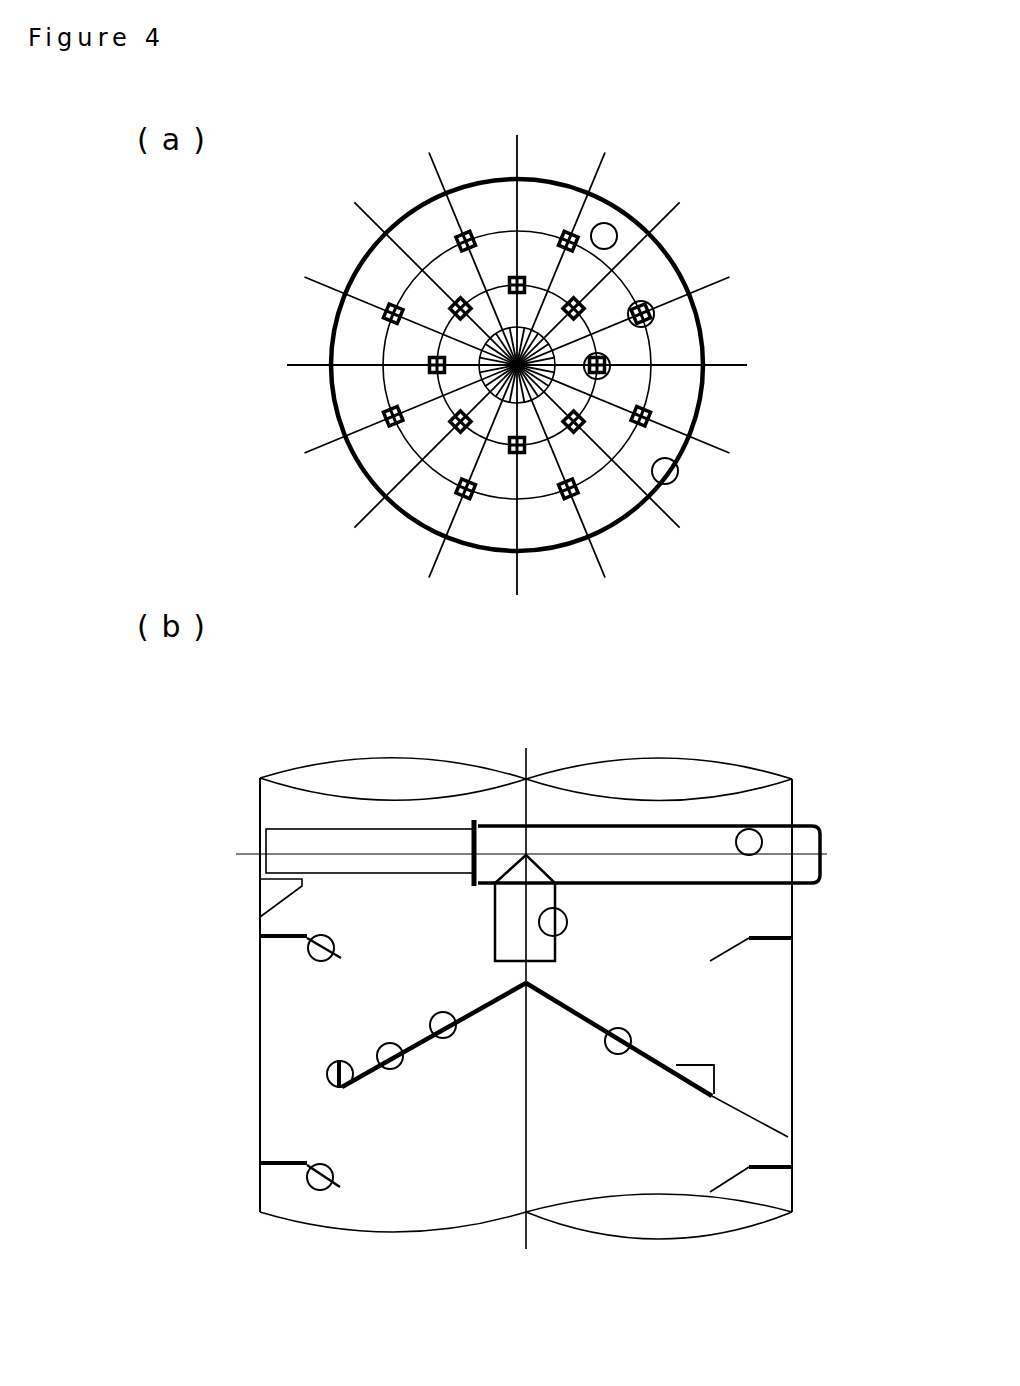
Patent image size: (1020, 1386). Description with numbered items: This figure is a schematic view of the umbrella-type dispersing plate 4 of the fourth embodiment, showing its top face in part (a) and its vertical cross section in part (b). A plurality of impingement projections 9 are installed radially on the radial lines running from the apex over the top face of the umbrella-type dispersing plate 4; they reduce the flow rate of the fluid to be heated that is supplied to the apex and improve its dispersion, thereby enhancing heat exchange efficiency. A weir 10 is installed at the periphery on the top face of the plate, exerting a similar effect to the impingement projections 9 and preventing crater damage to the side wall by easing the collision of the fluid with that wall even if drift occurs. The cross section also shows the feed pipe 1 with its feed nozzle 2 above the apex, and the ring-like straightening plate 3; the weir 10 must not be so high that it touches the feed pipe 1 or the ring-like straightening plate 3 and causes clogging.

The feed pipe 1 is at (758, 835).
The feed nozzle 2 is at (564, 932).
The ring-like straightening plate 3 is at (308, 1165).
The umbrella-type dispersing plate 4 is at (611, 223).
The impingement projection 9 is at (649, 307).
The weir 10 is at (677, 480).